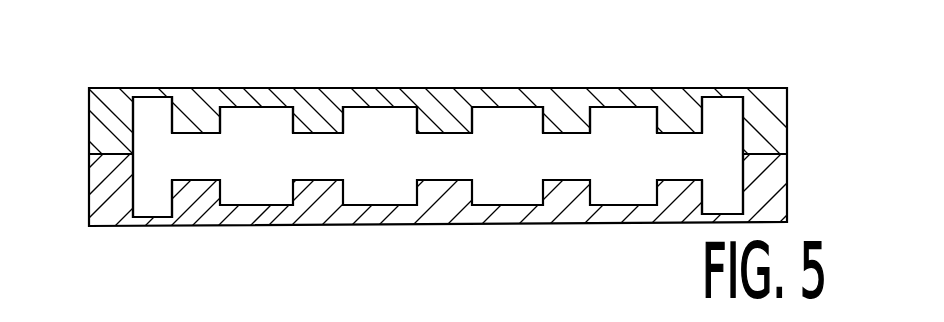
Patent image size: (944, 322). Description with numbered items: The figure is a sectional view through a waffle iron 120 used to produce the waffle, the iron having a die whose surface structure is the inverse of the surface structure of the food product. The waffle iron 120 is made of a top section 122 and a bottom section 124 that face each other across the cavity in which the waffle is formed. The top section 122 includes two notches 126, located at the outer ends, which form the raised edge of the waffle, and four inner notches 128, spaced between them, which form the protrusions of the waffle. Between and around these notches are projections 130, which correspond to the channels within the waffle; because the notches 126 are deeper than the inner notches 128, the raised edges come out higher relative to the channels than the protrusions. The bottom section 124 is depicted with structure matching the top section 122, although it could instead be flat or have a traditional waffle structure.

The waffle iron 120 is at (801, 155).
The top section 122 is at (88, 107).
The bottom section 124 is at (90, 178).
The notches 126 is at (143, 108).
The inner notches 128 is at (607, 110).
The projections 130 is at (652, 115).